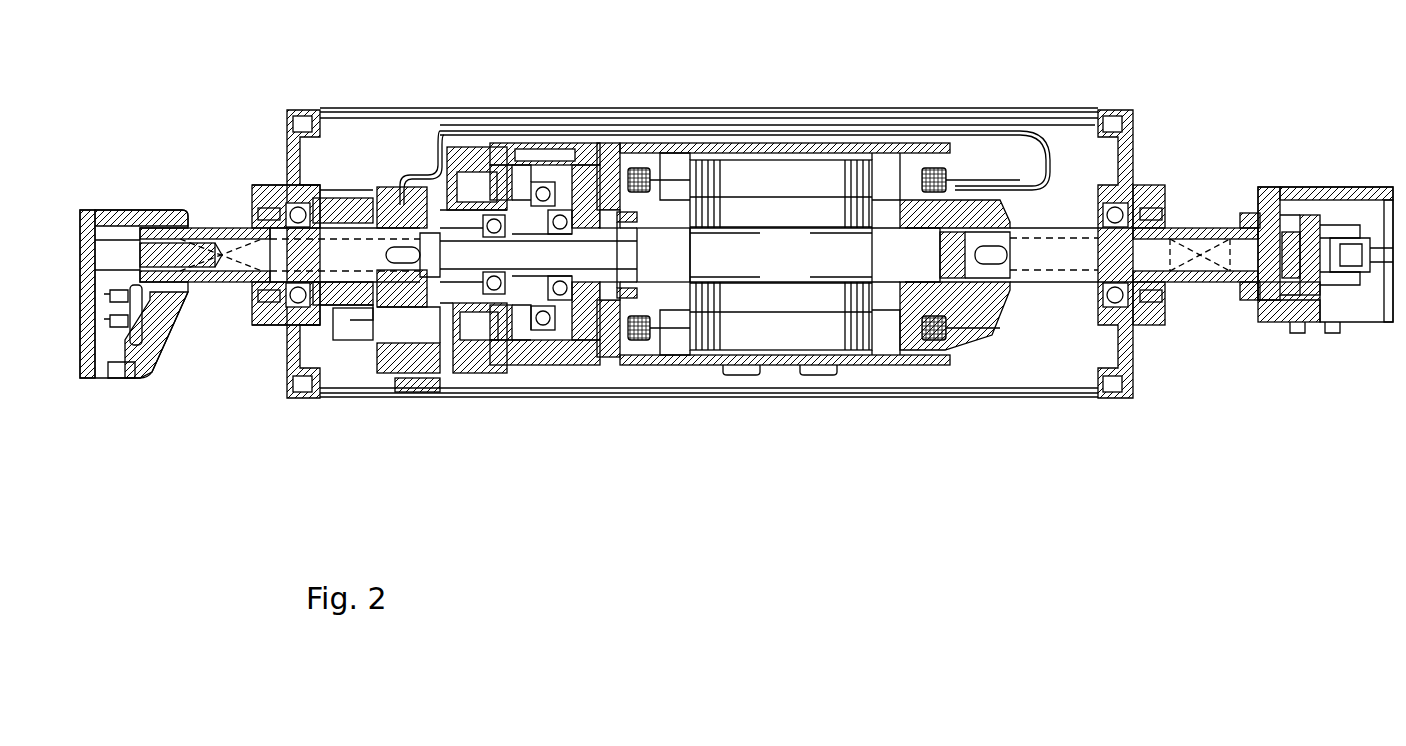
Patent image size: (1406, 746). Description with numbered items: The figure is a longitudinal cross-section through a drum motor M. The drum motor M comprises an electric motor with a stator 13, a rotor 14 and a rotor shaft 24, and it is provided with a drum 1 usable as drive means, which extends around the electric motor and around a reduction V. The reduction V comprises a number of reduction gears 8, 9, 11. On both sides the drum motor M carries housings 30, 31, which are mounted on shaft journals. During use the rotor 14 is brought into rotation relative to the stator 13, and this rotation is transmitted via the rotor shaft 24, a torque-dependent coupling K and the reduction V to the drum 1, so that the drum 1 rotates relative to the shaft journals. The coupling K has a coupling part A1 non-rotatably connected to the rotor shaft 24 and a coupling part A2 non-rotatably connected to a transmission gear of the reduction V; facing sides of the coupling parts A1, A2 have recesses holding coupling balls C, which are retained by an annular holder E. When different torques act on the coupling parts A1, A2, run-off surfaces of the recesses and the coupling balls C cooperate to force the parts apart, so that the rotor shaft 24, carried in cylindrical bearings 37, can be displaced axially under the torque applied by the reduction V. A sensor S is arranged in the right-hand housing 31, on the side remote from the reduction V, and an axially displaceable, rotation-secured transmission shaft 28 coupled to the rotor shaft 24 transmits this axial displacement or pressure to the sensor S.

The drum 1 is at (742, 112).
The reduction gear 8 is at (349, 208).
The reduction gear 9 is at (348, 325).
The reduction gear 11 is at (440, 325).
The stator 13 is at (858, 178).
The rotor 14 is at (818, 210).
The rotor shaft 24 is at (627, 253).
The transmission shaft 28 is at (1246, 252).
The housing 30 is at (133, 208).
The housing 31 is at (1317, 222).
The bearings 37 is at (627, 283).
The coupling part A1 is at (578, 293).
The coupling part A2 is at (523, 327).
The coupling balls C is at (570, 318).
The annular holder E is at (558, 297).
The torque-dependent coupling K is at (560, 193).
The drum motor M is at (876, 250).
The sensor S is at (1292, 247).
The reduction V is at (406, 385).